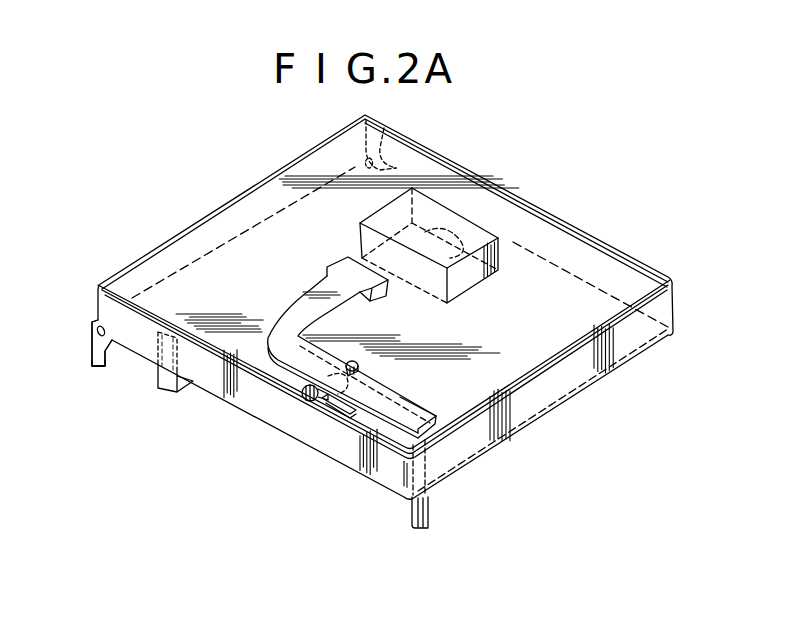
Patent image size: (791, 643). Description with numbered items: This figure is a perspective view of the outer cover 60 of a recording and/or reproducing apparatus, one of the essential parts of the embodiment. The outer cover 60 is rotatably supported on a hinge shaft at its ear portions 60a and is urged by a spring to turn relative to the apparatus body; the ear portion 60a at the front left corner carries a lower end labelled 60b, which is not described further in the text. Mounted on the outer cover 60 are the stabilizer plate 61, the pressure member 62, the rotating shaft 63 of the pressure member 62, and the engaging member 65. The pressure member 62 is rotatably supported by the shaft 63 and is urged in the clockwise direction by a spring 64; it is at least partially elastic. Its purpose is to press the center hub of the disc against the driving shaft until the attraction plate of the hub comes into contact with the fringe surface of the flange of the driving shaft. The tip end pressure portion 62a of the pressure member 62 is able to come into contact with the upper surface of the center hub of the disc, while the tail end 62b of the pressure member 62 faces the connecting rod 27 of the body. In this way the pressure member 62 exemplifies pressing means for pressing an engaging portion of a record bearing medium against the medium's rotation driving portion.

The connecting rod 27 is at (429, 511).
The outer cover 60 is at (590, 252).
The ear portions 60a is at (393, 138).
The tab lower end 60b is at (90, 362).
The stabilizer plate 61 is at (458, 227).
The pressure member 62 is at (280, 348).
The tip end pressure portion 62a is at (385, 303).
The tail end 62b is at (413, 412).
The rotating shaft 63 is at (302, 400).
The spring 64 is at (350, 407).
The engaging member 65 is at (167, 387).